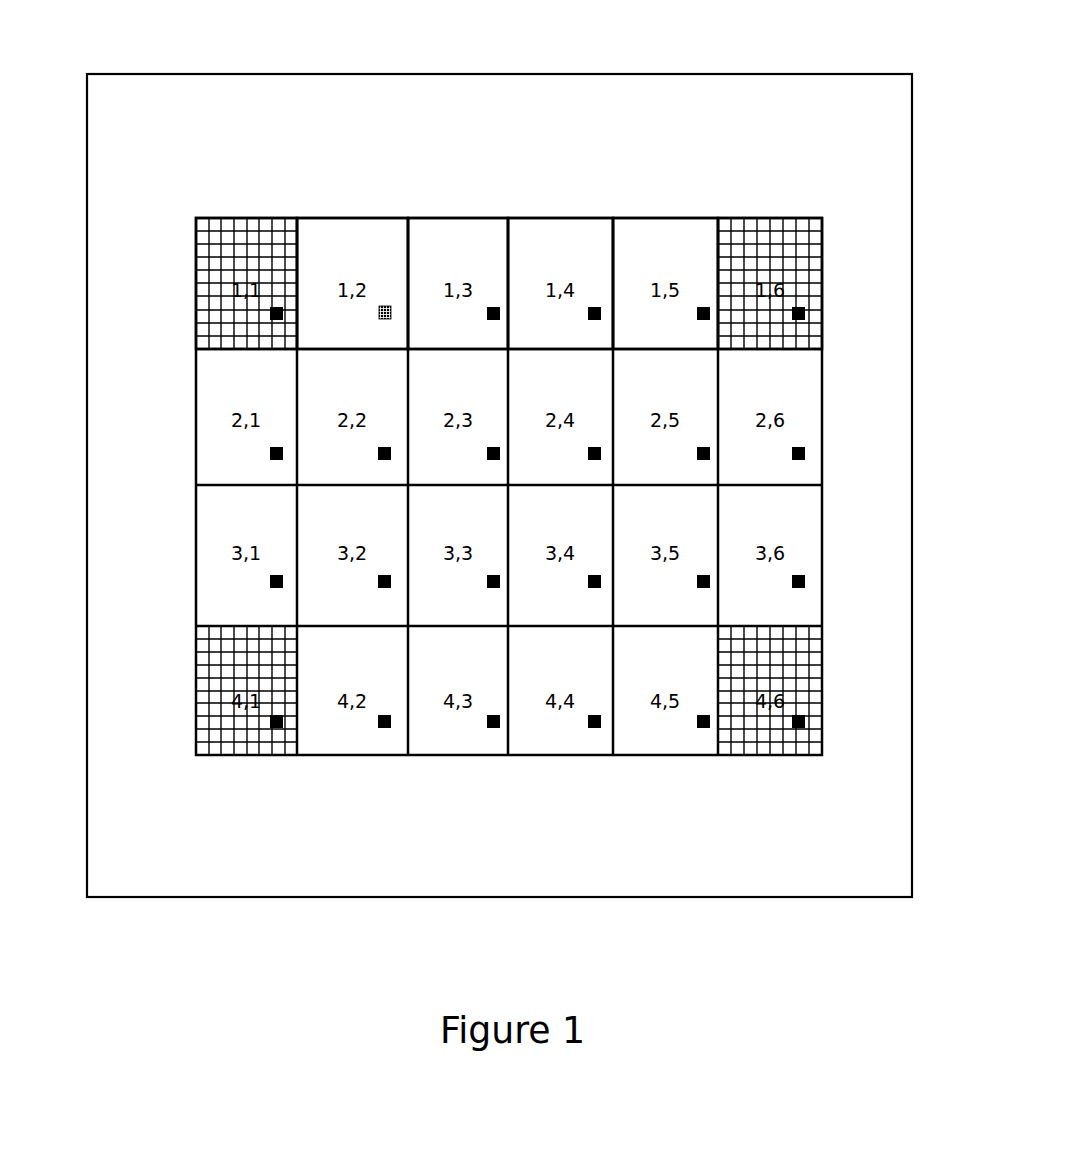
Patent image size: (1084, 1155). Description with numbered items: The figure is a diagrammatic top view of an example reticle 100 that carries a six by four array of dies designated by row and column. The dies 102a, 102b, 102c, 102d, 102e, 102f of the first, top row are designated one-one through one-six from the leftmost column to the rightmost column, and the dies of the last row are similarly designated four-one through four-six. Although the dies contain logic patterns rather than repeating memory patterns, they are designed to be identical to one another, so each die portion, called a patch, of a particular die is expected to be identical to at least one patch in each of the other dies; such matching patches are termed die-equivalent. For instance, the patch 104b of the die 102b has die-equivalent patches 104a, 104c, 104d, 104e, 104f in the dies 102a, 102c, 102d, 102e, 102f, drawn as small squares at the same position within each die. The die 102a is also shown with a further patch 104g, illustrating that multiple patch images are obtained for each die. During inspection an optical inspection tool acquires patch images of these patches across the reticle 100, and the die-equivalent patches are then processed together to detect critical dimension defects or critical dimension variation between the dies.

The reticle 100 is at (710, 73).
The die 102a is at (250, 217).
The die 102b is at (353, 233).
The die 102c is at (448, 233).
The die 102d is at (585, 238).
The die 102e is at (672, 238).
The die 102f is at (808, 217).
The patch 104a is at (272, 313).
The patch 104b is at (387, 306).
The patch 104c is at (497, 312).
The patch 104d is at (597, 313).
The patch 104e is at (705, 313).
The patch 104f is at (802, 313).
The patch 104g is at (240, 247).